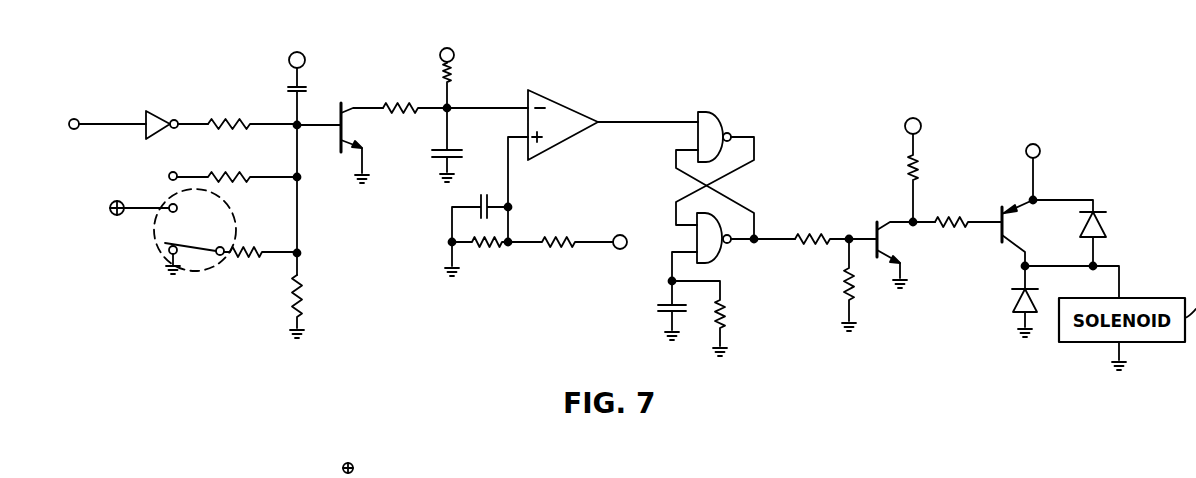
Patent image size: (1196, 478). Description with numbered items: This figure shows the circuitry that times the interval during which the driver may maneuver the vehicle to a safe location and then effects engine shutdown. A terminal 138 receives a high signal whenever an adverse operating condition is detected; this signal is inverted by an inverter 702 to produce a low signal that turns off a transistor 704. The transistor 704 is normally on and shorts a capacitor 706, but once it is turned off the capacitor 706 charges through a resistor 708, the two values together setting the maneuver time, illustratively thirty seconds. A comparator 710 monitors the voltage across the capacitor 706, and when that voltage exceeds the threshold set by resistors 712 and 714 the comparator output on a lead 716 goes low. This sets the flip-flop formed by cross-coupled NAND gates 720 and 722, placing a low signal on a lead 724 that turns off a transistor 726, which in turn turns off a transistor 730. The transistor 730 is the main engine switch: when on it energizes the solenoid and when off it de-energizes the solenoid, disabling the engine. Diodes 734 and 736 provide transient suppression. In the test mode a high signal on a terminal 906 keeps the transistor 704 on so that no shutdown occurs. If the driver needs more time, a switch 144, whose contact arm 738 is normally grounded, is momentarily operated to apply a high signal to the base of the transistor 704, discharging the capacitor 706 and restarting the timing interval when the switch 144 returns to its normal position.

The terminal 138 is at (112, 121).
The inverter 702 is at (156, 131).
The terminal 906 is at (170, 175).
The switch 144 is at (157, 248).
The contact arm 738 is at (193, 260).
The transistor 704 is at (355, 133).
The capacitor 706 is at (452, 150).
The resistor 708 is at (453, 77).
The comparator 710 is at (558, 102).
The resistor 712 is at (485, 250).
The resistor 714 is at (557, 250).
The lead 716 is at (622, 121).
The NAND gate 720 is at (711, 112).
The NAND gate 722 is at (729, 258).
The lead 724 is at (804, 236).
The transistor 726 is at (886, 243).
The transistor 730 is at (997, 212).
The diode 734 is at (1105, 225).
The diode 736 is at (1017, 297).